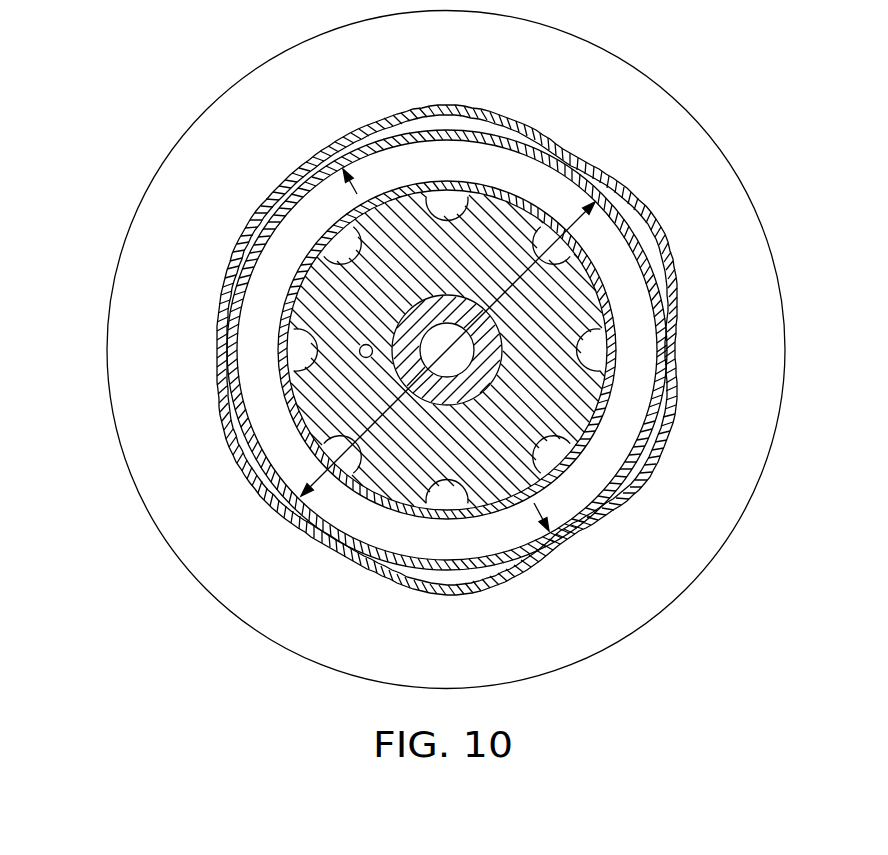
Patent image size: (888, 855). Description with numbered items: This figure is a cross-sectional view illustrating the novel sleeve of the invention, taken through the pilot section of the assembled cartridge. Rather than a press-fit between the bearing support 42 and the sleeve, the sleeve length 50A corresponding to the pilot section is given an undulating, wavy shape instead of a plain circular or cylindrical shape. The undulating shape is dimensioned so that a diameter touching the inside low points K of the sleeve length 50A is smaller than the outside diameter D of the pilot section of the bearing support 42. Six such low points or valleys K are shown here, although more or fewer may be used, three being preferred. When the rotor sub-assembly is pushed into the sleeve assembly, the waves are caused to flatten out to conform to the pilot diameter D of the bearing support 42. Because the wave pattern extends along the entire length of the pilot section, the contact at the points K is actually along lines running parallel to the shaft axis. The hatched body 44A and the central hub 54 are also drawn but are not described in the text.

The sleeve length 50A is at (600, 165).
The bearing support 42 is at (631, 241).
The hatched disc body 44A is at (575, 399).
The central hub 54 is at (400, 323).
The outside diameter of the pilot section D is at (322, 475).
The inside low points K is at (348, 190).